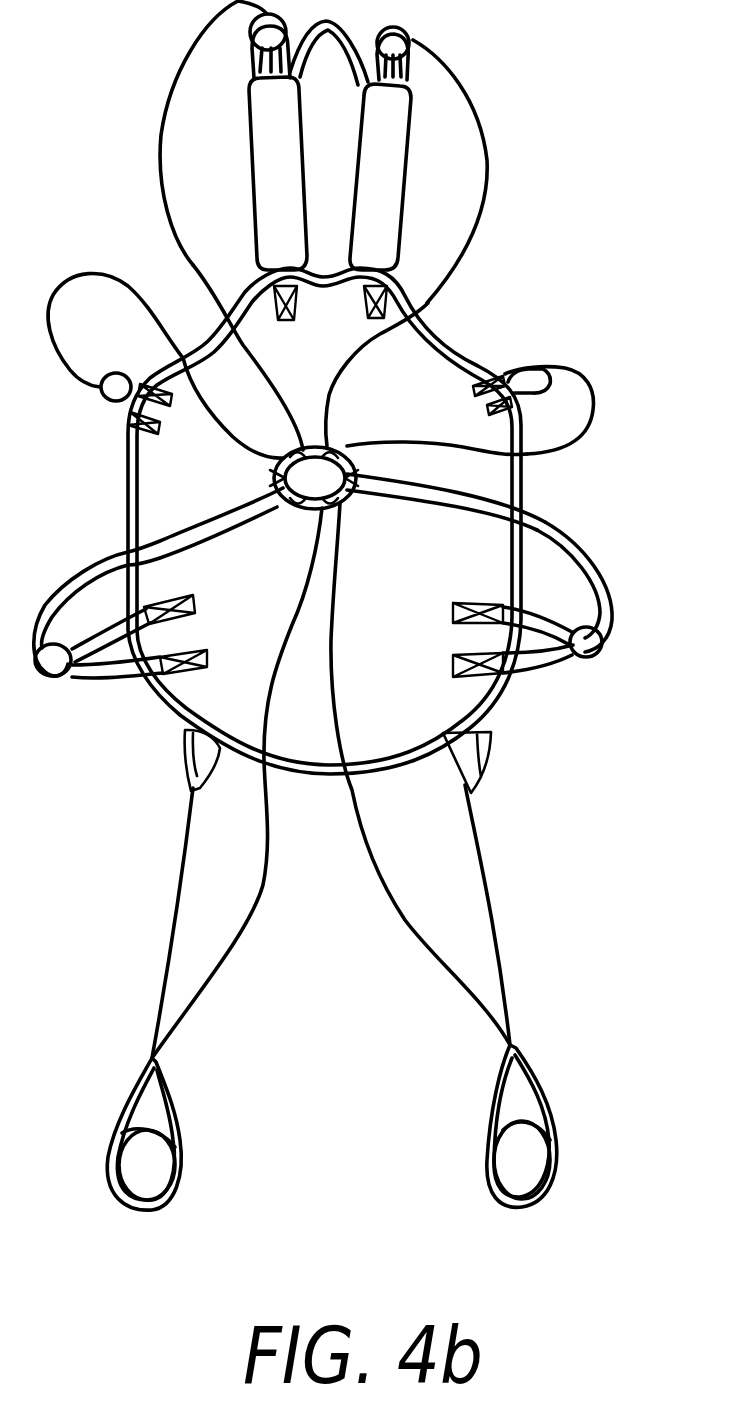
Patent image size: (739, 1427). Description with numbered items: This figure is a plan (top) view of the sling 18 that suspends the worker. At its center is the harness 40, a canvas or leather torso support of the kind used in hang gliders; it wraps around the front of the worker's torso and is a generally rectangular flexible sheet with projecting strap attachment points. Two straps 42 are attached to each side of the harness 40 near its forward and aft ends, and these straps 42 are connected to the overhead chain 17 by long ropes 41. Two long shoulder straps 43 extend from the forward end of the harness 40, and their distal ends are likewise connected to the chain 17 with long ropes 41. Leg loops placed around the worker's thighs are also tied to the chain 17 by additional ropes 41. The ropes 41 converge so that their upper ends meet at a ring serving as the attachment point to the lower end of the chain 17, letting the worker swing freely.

The overhead chain 17 is at (298, 506).
The sling 18 is at (537, 490).
The harness 40 is at (126, 504).
The long ropes 41 is at (431, 496).
The straps 42 is at (550, 660).
The shoulder straps 43 is at (268, 147).